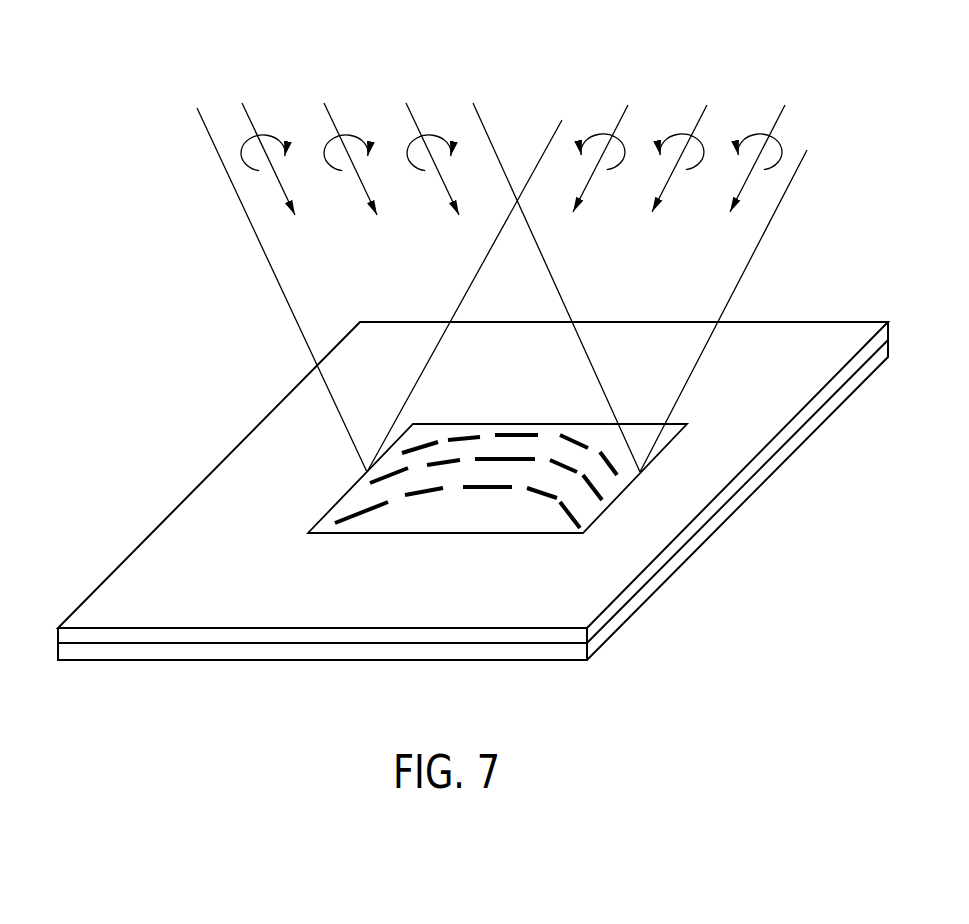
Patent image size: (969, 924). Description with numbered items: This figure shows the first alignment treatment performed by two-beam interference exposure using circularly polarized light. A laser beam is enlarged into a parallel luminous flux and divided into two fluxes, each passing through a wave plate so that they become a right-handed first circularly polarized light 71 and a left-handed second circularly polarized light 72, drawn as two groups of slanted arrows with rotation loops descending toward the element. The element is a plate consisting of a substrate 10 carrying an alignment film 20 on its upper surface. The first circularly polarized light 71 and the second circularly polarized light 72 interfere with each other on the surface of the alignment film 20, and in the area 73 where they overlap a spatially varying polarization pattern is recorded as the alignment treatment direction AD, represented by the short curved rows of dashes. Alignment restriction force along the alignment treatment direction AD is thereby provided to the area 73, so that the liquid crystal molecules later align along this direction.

The substrate 10 is at (735, 503).
The alignment film 20 is at (755, 463).
The first circularly polarized light 71 is at (318, 80).
The second circularly polarized light 72 is at (708, 80).
The area 73 is at (607, 510).
The alignment treatment direction AD is at (563, 515).